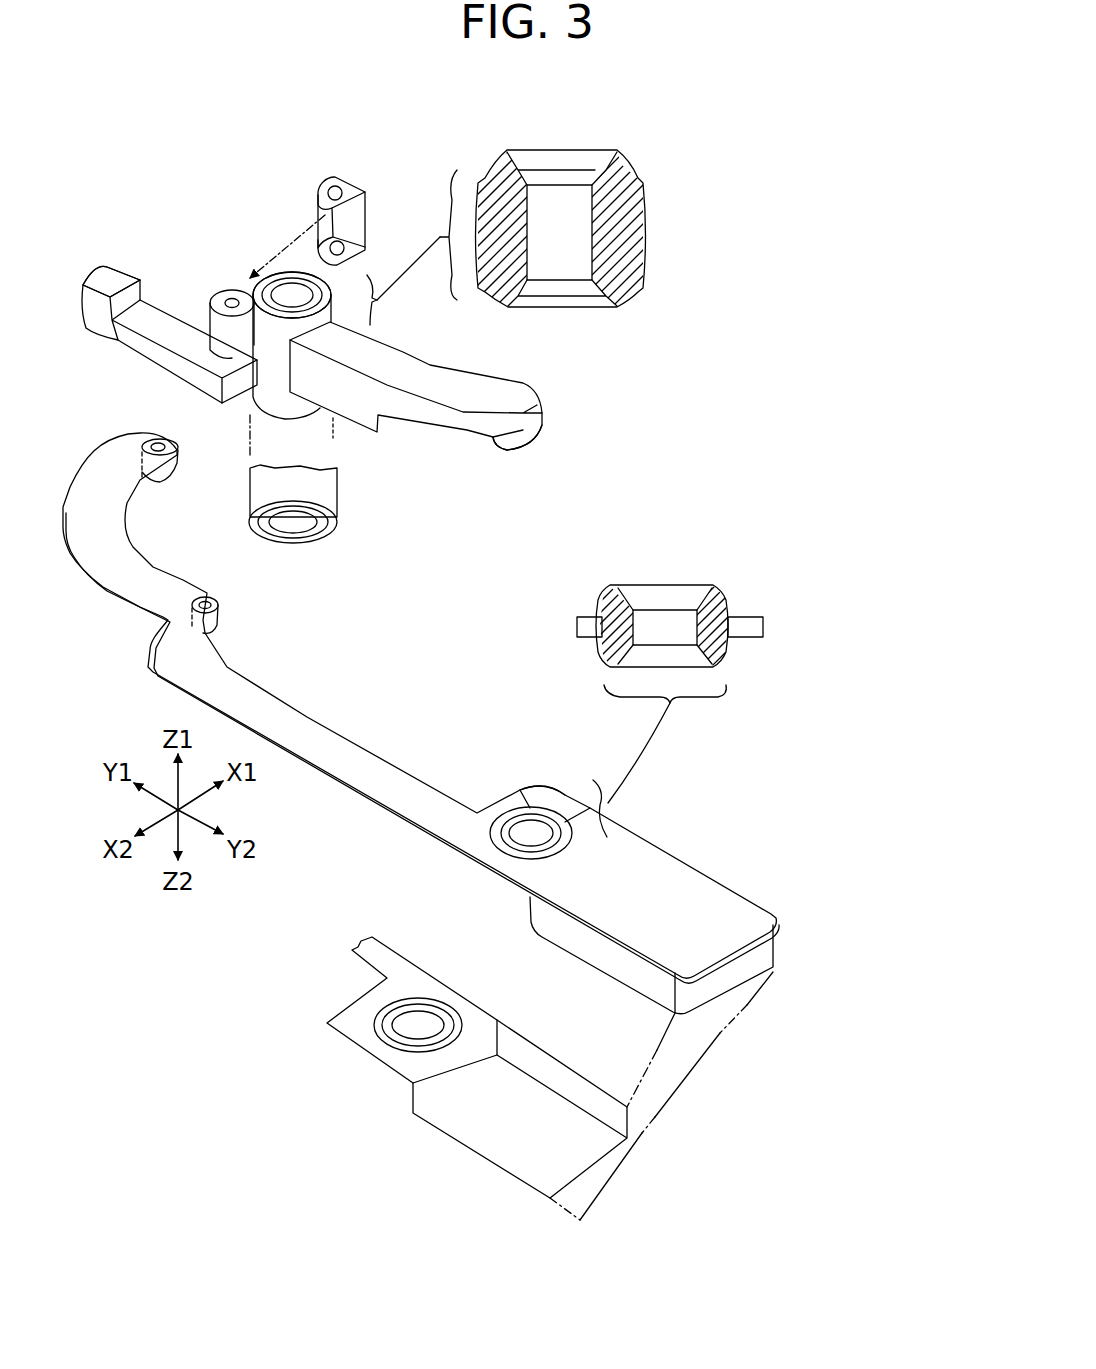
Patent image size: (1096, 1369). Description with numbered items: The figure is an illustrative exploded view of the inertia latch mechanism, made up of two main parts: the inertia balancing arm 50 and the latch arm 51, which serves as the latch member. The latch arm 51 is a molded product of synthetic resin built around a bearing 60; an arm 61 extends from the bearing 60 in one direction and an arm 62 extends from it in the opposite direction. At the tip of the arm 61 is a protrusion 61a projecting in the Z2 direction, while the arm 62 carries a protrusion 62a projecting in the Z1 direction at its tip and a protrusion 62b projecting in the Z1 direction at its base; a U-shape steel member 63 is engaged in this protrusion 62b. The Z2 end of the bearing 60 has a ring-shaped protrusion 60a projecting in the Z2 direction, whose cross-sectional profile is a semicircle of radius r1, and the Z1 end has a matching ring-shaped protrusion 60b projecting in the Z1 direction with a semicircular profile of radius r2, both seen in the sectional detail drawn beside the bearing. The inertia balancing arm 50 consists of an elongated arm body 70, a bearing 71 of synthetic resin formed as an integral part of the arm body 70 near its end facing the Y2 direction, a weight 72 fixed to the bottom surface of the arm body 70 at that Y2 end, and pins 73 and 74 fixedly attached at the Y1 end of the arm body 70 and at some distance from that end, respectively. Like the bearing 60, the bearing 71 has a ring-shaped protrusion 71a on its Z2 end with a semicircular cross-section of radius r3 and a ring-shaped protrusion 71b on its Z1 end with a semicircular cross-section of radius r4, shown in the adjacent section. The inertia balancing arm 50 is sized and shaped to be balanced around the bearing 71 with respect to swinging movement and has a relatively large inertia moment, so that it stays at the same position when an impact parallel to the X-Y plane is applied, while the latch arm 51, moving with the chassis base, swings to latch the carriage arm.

The inertia balancing arm 50 is at (490, 760).
The latch arm 51 is at (242, 262).
The bearing 60 is at (306, 411).
The protrusion 60a is at (325, 537).
The protrusion 60b is at (268, 275).
The arm 61 is at (477, 403).
The protrusion 61a is at (527, 440).
The arm 62 is at (143, 350).
The protrusion 62a is at (103, 272).
The protrusion 62b is at (215, 298).
The U-shape steel member 63 is at (355, 190).
The arm body 70 is at (383, 763).
The bearing 71 is at (533, 807).
The protrusion 71a is at (390, 1048).
The protrusion 71b is at (610, 590).
The weight 72 is at (730, 977).
The pin 73 is at (168, 487).
The pin 74 is at (205, 634).
The radius r1 is at (620, 300).
The radius r2 is at (620, 152).
The radius r3 is at (718, 666).
The radius r4 is at (716, 585).